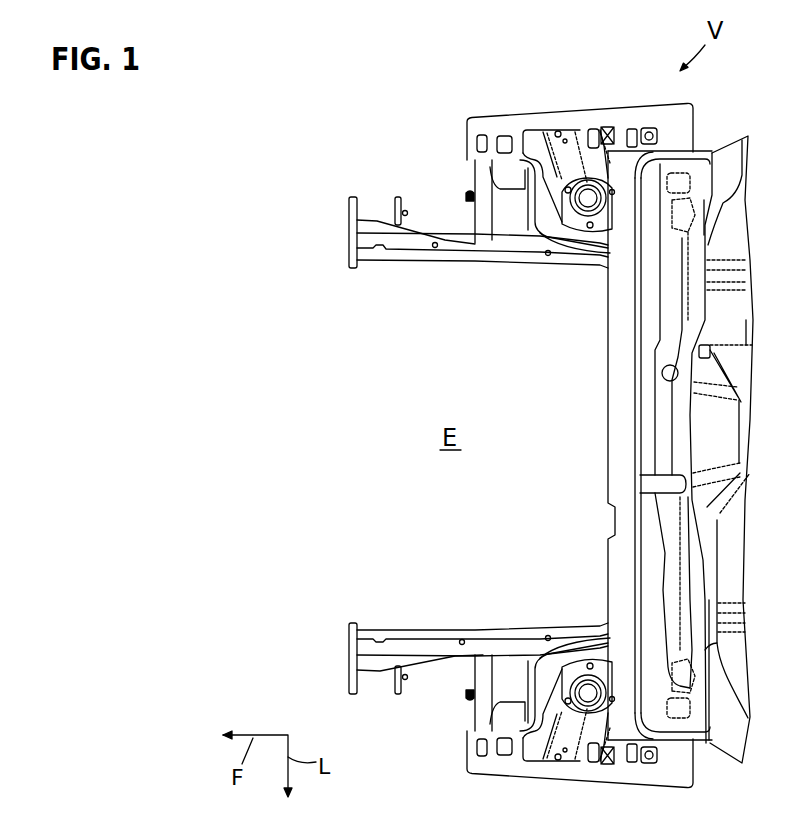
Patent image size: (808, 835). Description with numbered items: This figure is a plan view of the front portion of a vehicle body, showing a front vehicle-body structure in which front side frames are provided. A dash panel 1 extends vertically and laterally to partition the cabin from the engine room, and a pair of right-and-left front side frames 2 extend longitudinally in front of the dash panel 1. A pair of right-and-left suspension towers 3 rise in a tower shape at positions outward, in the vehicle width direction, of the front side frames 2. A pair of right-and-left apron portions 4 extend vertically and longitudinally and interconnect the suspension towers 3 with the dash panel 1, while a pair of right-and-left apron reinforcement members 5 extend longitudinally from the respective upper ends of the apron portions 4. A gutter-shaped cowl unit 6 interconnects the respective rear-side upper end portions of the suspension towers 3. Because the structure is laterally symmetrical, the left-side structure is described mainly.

The dash panel 1 is at (750, 188).
The front side frame 2 is at (392, 270).
The suspension tower 3 is at (588, 178).
The apron portion 4 is at (502, 198).
The apron reinforcement member 5 is at (511, 113).
The cowl unit 6 is at (617, 390).